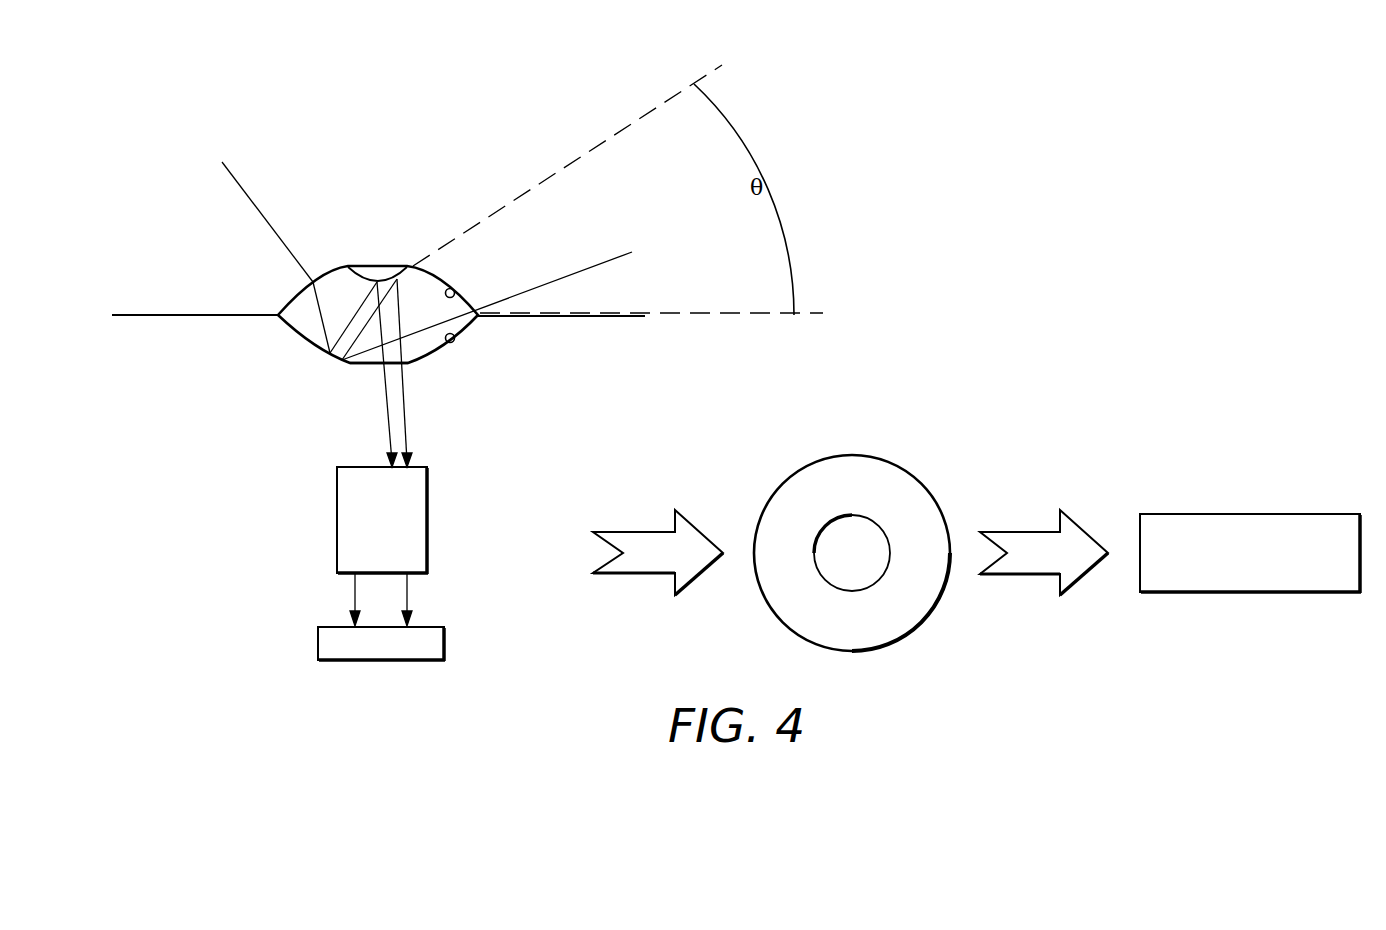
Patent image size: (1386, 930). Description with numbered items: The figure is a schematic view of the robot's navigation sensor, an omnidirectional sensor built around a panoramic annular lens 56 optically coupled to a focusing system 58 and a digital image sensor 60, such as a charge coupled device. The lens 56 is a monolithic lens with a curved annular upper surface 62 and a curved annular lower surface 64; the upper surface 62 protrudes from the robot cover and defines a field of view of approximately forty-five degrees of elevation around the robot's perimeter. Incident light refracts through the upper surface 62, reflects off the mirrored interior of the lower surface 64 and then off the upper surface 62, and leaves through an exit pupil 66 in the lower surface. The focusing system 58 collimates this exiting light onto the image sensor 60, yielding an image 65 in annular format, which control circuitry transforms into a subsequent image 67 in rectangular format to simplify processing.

The panoramic annular lens 56 is at (353, 260).
The focusing system 58 is at (337, 483).
The digital image sensor 60 is at (318, 644).
The curved annular upper surface 62 is at (454, 293).
The curved annular lower surface 64 is at (454, 338).
The annular image 65 is at (848, 455).
The exit pupil 66 is at (358, 366).
The rectangular image 67 is at (1333, 514).